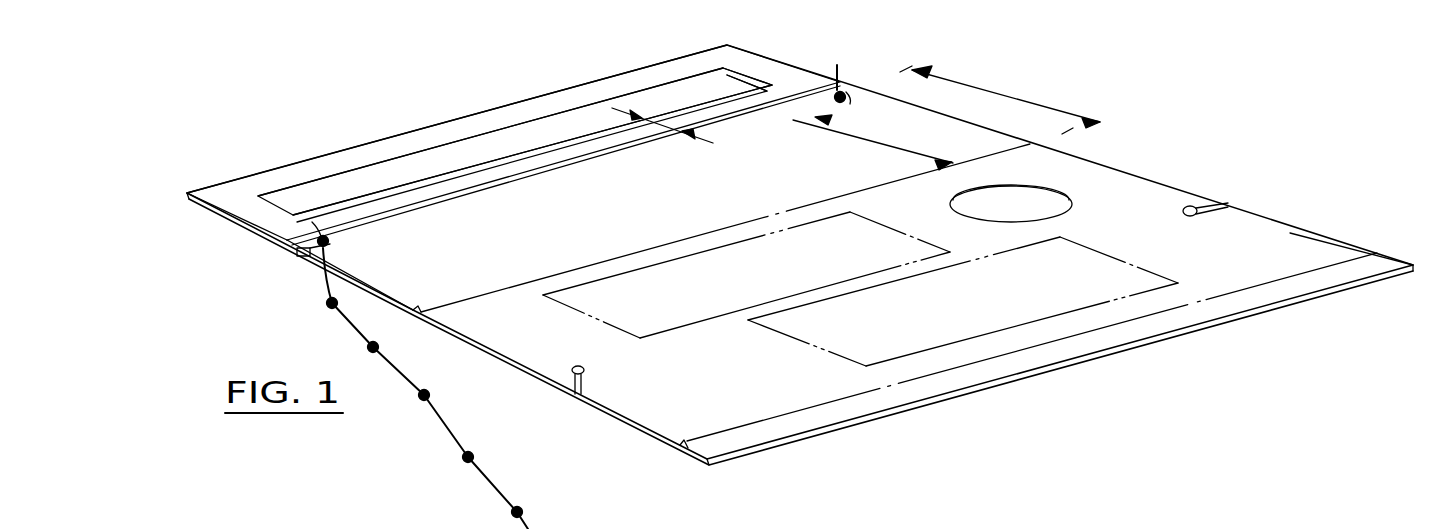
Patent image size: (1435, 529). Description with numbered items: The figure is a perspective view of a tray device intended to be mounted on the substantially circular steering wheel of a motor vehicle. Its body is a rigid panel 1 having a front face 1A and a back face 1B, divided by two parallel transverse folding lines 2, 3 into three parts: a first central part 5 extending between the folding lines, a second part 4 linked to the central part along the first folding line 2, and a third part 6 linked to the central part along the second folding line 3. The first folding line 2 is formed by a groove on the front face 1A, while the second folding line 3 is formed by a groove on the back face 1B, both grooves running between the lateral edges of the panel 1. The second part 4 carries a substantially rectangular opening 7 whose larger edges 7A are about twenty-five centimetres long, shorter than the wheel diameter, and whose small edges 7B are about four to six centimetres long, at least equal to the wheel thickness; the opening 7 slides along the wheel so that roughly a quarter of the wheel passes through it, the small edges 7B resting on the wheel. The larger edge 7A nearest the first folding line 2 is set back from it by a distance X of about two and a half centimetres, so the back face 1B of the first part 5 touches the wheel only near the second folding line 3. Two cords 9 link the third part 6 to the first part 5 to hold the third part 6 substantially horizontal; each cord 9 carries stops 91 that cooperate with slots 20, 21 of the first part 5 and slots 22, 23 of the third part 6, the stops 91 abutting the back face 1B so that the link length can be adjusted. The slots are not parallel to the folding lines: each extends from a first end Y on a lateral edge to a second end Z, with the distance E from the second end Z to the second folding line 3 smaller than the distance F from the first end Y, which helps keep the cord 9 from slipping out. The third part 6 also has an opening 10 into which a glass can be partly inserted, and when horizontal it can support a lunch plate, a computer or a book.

The rigid panel 1 is at (1170, 176).
The front face 1A is at (677, 408).
The back face 1B is at (482, 353).
The first folding line 2 is at (458, 192).
The second folding line 3 is at (635, 250).
The second part 4 is at (252, 213).
The first central part 5 is at (360, 267).
The third part 6 is at (1290, 233).
The opening 7 is at (455, 158).
The larger edges 7A is at (510, 130).
The small edges 7B is at (750, 78).
The cord 9 is at (405, 373).
The stop 91 is at (463, 462).
The opening 10 is at (1022, 195).
The first slot 20 is at (305, 253).
The second slot 21 is at (848, 95).
The first slot 22 is at (577, 396).
The second slot 23 is at (1228, 204).
The distance X is at (657, 127).
The first end Y is at (863, 85).
The second end Z is at (846, 100).
The distance E is at (890, 143).
The distance F is at (1007, 97).